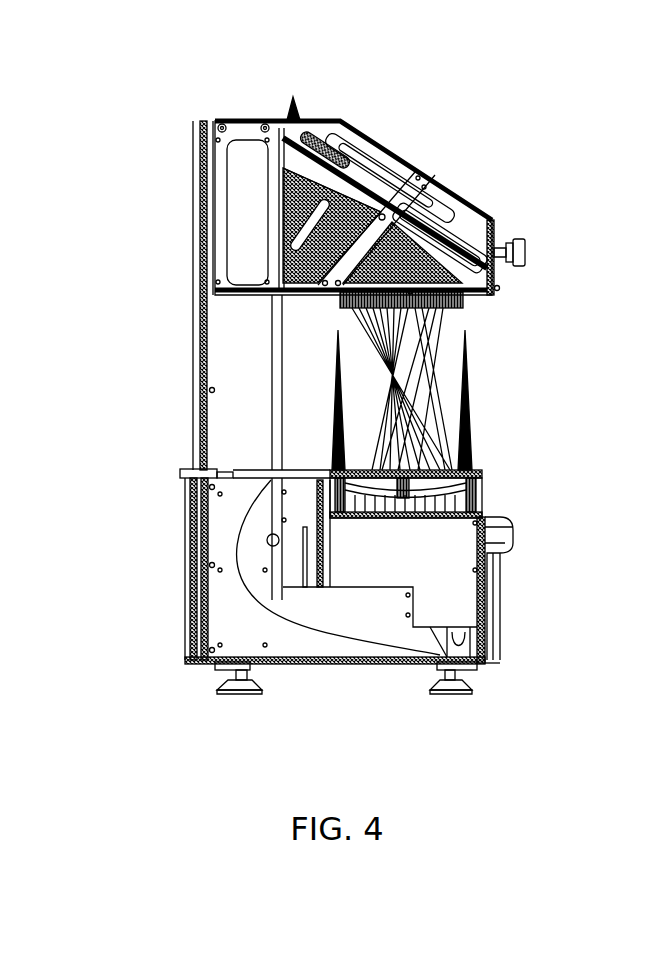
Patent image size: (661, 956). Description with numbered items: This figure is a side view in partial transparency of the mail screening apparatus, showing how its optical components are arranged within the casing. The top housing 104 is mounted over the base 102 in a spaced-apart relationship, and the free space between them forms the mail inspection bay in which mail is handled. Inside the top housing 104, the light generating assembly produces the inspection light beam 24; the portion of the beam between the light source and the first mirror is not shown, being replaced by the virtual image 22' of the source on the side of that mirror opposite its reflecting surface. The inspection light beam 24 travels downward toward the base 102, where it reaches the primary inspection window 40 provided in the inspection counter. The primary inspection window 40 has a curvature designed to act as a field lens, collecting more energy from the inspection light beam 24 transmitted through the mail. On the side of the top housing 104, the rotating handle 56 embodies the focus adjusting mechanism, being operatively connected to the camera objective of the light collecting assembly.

The virtual image of the source 22' is at (286, 78).
The top housing 104 is at (346, 136).
The rotating handle 56 is at (527, 252).
The inspection light beam 24 is at (428, 328).
The primary inspection window 40 is at (447, 486).
The base 102 is at (230, 605).